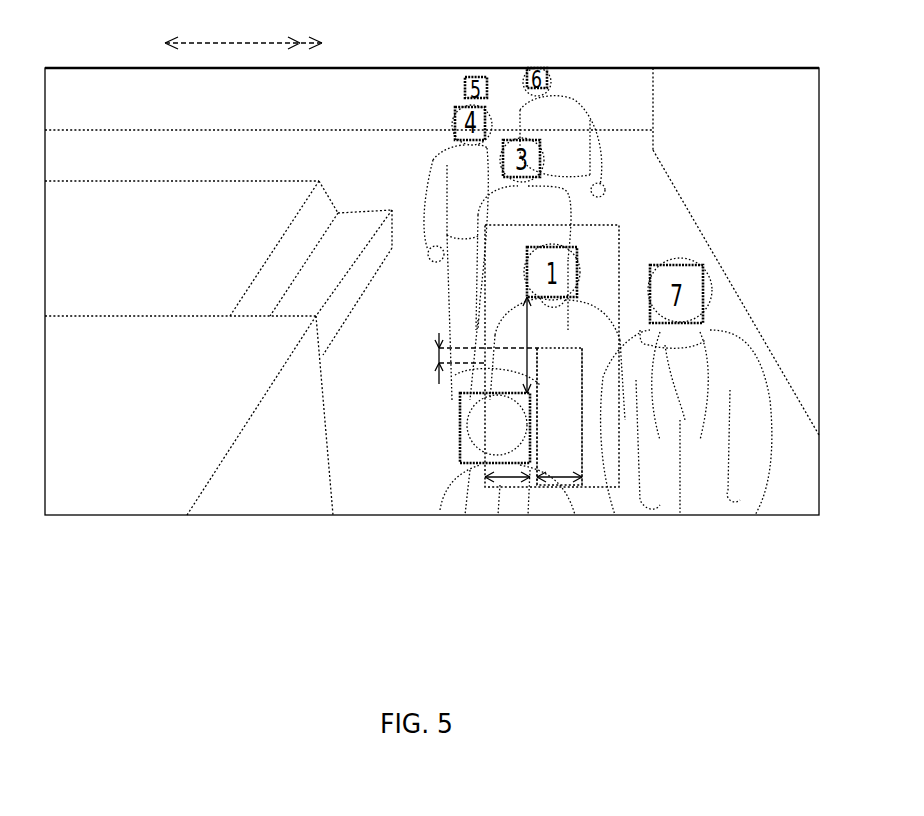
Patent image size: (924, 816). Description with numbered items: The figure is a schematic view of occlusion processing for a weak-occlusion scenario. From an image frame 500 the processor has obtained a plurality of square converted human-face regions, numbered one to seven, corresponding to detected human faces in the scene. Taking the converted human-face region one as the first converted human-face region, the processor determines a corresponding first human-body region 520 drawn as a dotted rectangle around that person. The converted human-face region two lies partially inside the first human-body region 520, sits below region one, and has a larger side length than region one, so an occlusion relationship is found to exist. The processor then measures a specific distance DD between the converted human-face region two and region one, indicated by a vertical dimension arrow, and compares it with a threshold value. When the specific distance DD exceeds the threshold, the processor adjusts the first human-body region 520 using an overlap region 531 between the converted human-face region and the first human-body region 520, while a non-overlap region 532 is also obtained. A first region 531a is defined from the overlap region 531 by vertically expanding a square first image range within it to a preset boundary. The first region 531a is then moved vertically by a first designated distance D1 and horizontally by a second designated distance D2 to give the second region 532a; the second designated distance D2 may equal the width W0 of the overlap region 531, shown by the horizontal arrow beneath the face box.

The image frame 500 is at (865, 599).
The first human-body region 520 is at (600, 225).
The overlap region 531 is at (517, 468).
The first region 531a is at (456, 393).
The non-overlap region 532 is at (583, 484).
The second region 532a is at (582, 433).
The first designated distance D1 is at (448, 358).
The second designated distance D2 is at (560, 490).
The specific distance DD is at (514, 345).
The width of the overlap region W0 is at (498, 492).